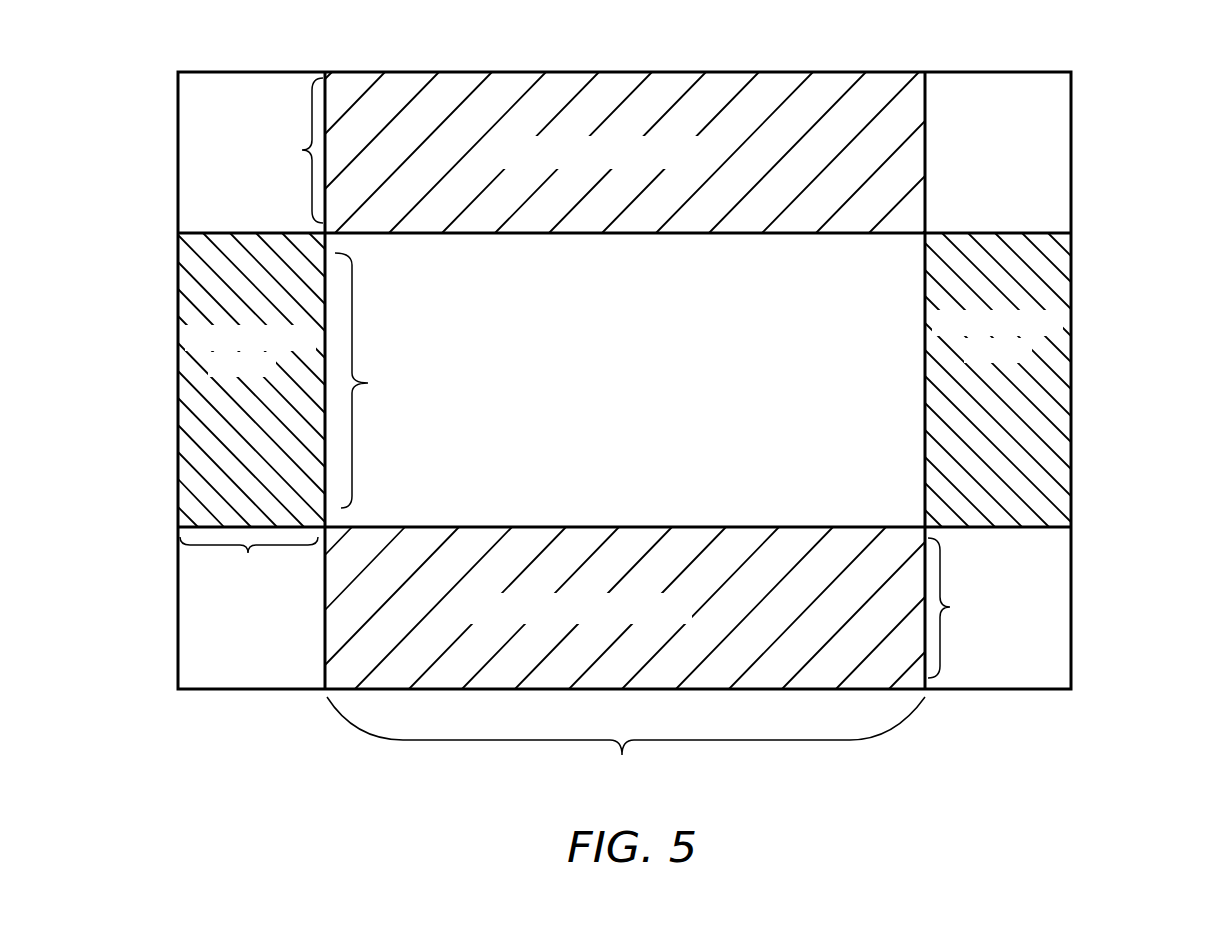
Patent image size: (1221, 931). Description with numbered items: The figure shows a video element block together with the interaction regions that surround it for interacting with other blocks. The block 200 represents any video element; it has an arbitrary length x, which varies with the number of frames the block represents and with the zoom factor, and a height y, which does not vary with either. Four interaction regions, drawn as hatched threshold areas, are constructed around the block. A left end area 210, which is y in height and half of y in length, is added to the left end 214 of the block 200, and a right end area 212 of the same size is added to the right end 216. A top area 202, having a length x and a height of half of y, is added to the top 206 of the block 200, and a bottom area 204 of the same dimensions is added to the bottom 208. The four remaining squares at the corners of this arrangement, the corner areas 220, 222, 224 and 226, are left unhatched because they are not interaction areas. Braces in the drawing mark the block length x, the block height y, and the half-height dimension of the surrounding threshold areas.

The block 200 is at (801, 455).
The top area 202 is at (819, 90).
The bottom area 204 is at (768, 677).
The top 206 is at (597, 237).
The bottom 208 is at (585, 526).
The left end area 210 is at (187, 418).
The right end area 212 is at (1060, 477).
The left end 214 is at (335, 460).
The right end 216 is at (927, 307).
The corner area 220 is at (245, 85).
The corner area 222 is at (1052, 153).
The corner area 224 is at (1033, 637).
The corner area 226 is at (247, 666).